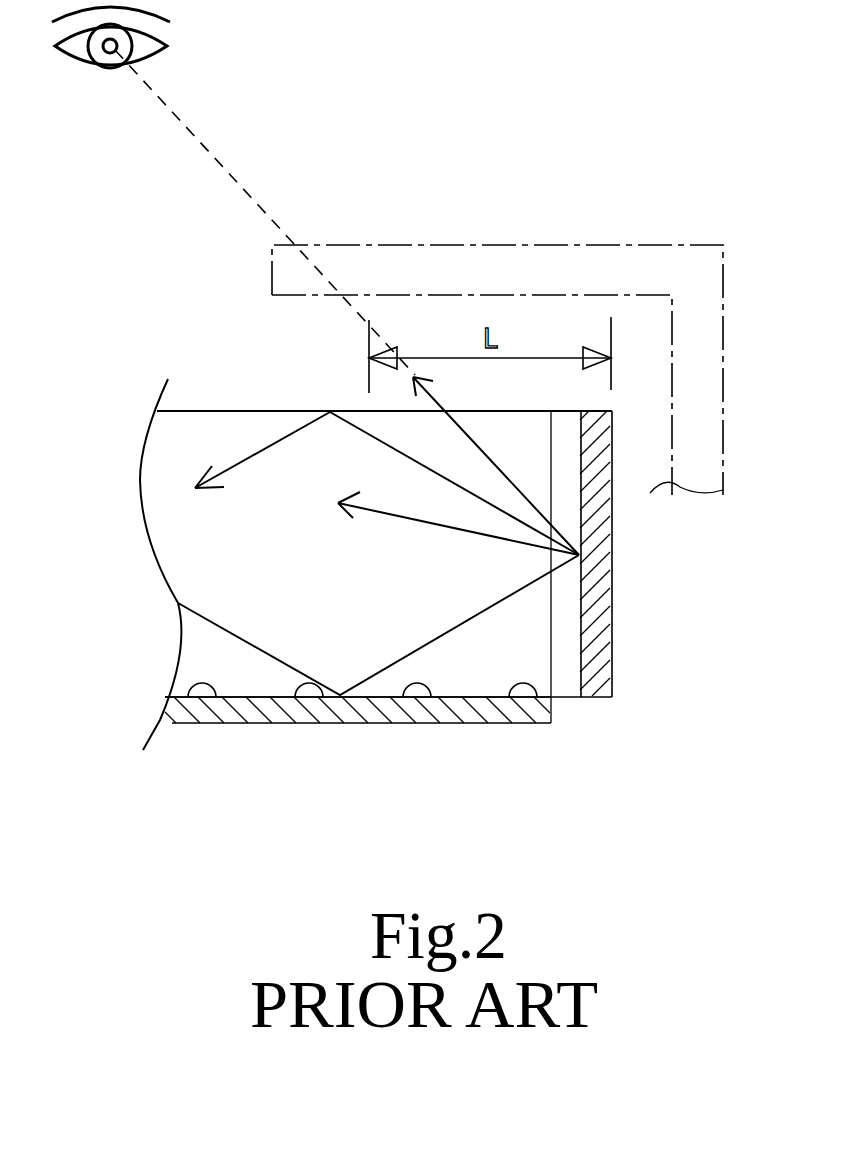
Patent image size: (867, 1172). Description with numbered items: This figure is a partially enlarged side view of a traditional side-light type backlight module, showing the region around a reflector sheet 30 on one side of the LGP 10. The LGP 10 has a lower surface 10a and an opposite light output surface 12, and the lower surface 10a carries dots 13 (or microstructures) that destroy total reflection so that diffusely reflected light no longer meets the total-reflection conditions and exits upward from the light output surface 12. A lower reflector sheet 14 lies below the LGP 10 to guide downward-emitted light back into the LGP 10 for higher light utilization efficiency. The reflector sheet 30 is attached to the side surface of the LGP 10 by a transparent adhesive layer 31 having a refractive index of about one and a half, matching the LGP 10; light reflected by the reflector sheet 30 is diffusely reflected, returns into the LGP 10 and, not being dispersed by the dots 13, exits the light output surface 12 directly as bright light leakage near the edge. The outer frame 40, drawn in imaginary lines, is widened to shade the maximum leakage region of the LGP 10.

The LGP 10 is at (199, 385).
The lower surface 10a is at (227, 700).
The light output surface 12 is at (265, 410).
The dots 13 is at (415, 690).
The lower reflector sheet 14 is at (278, 715).
The reflector sheet 30 is at (603, 648).
The transparent adhesive layer 31 is at (562, 683).
The outer frame 40 is at (465, 245).